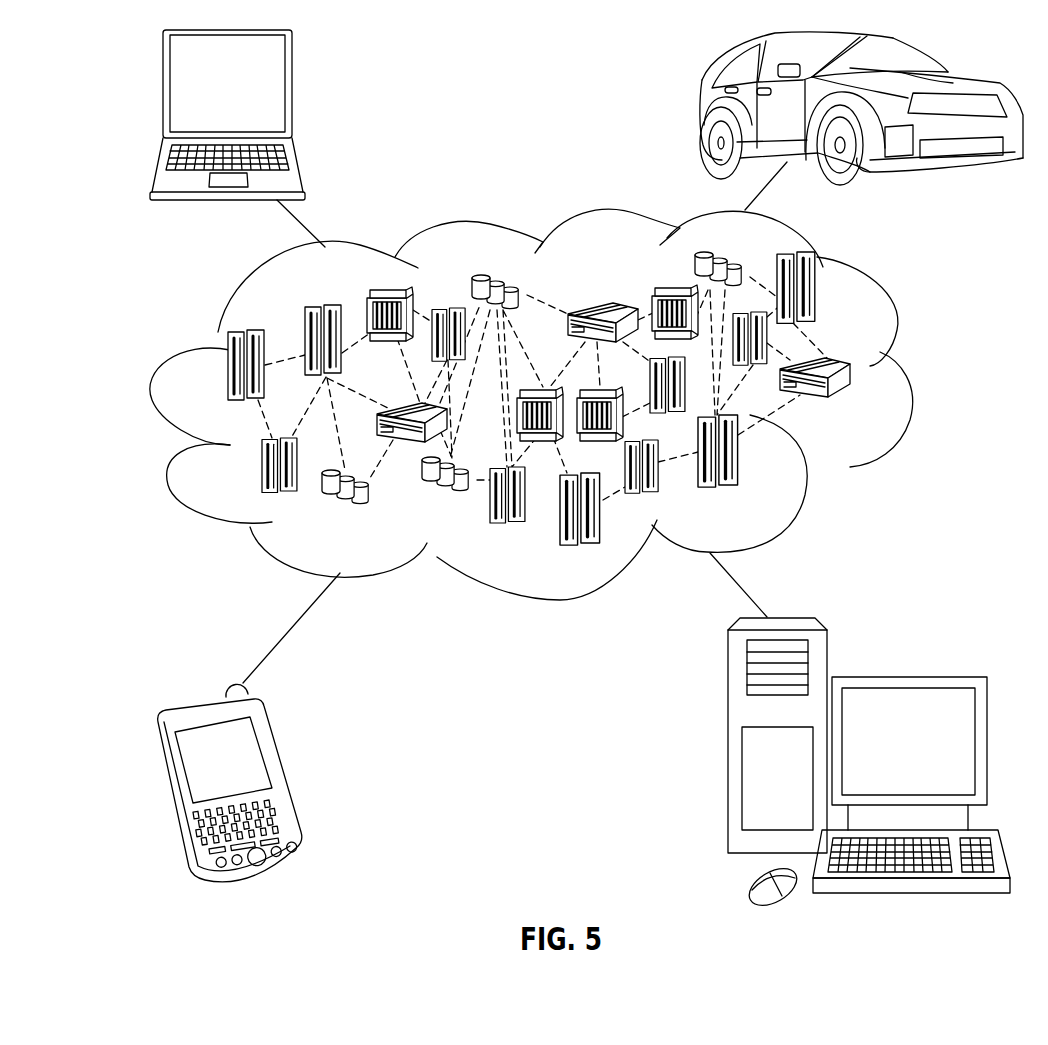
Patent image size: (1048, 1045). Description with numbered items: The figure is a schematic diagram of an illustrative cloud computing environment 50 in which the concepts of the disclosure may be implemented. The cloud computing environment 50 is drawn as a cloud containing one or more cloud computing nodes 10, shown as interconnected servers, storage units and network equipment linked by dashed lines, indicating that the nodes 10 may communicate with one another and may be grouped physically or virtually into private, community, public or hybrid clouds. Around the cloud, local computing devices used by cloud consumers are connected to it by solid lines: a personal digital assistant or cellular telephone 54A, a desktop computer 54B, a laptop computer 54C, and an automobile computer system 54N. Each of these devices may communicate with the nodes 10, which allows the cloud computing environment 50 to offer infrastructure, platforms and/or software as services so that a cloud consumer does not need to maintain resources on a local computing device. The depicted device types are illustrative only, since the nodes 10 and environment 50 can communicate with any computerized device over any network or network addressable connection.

The cloud computing nodes 10 is at (866, 417).
The cloud computing environment 50 is at (908, 378).
The personal digital assistant (PDA) or cellular telephone 54A is at (283, 772).
The desktop computer 54B is at (905, 673).
The laptop computer 54C is at (292, 92).
The automobile computer system 54N is at (700, 108).